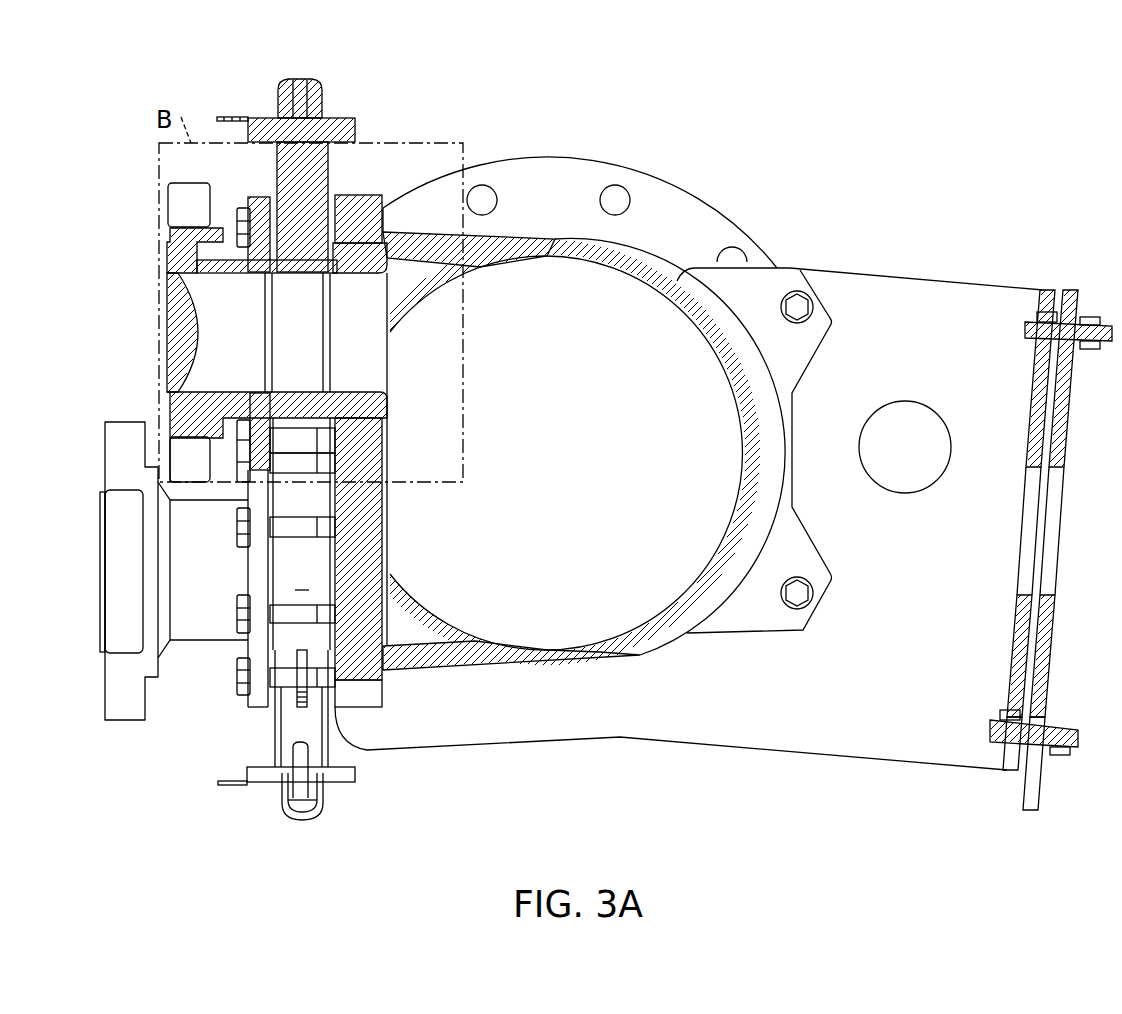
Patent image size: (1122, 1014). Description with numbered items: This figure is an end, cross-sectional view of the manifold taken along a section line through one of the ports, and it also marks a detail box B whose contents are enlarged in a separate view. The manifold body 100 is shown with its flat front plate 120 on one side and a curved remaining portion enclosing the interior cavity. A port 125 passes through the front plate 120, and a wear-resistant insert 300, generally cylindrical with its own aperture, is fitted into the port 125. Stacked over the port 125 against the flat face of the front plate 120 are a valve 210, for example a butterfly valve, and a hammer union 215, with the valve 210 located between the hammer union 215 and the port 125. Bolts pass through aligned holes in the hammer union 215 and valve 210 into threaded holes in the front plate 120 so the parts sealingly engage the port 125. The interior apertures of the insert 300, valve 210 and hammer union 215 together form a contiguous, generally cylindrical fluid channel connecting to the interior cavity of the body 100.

The body 100 is at (660, 627).
The front plate 120 is at (379, 185).
The port 125 is at (383, 330).
The valve 210 is at (300, 144).
The hammer union 215 is at (178, 255).
The wear-resistant insert 300 is at (353, 263).